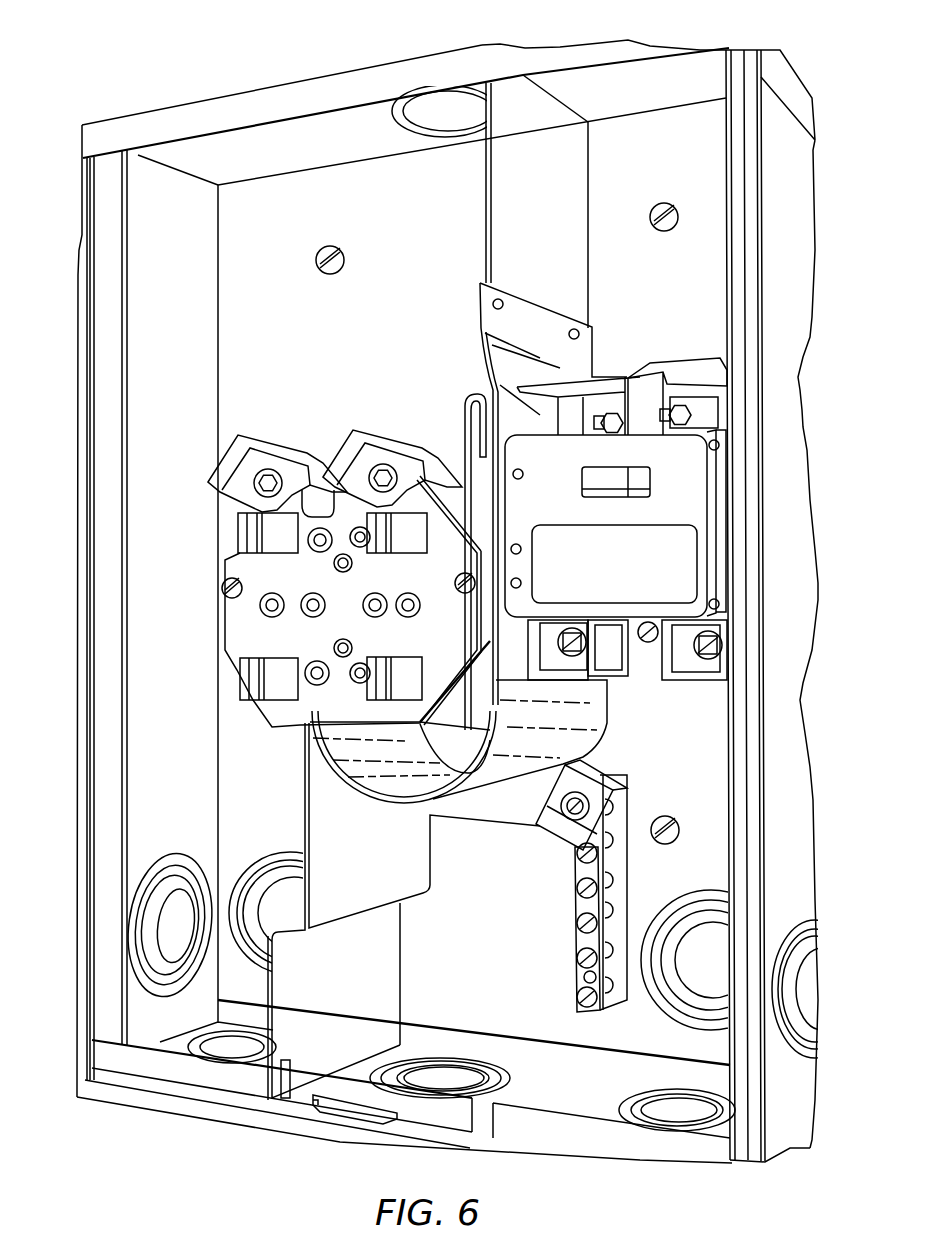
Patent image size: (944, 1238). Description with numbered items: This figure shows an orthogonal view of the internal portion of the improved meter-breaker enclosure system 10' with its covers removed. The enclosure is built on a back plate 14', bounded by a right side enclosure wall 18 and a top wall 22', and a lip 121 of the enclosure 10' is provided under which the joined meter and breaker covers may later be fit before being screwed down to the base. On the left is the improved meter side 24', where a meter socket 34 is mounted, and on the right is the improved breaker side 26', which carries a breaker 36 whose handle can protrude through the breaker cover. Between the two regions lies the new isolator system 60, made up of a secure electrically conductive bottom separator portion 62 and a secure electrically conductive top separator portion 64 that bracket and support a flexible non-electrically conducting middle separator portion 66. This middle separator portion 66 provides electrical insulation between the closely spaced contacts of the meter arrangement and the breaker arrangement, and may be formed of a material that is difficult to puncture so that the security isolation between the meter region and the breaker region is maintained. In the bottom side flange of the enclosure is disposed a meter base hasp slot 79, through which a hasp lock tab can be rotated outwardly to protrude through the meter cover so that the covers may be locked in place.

The meter-breaker enclosure system 10' is at (130, 611).
The lip 121 is at (218, 137).
The top wall 22' is at (604, 42).
The right side enclosure wall 18 is at (785, 428).
The top separator portion 64 is at (538, 215).
The middle separator portion 66 is at (580, 352).
The meter socket 34 is at (305, 443).
The breaker 36 is at (693, 503).
The isolator system 60 is at (378, 969).
The bottom separator portion 62 is at (297, 1005).
The meter base hasp slot 79 is at (323, 1096).
The back plate 14' is at (447, 1065).
The meter side 24' is at (407, 1097).
The breaker side 26' is at (404, 1146).